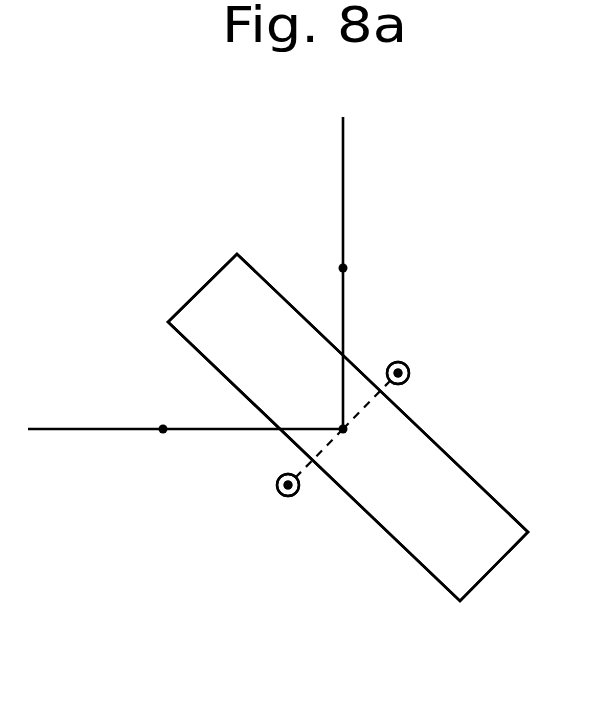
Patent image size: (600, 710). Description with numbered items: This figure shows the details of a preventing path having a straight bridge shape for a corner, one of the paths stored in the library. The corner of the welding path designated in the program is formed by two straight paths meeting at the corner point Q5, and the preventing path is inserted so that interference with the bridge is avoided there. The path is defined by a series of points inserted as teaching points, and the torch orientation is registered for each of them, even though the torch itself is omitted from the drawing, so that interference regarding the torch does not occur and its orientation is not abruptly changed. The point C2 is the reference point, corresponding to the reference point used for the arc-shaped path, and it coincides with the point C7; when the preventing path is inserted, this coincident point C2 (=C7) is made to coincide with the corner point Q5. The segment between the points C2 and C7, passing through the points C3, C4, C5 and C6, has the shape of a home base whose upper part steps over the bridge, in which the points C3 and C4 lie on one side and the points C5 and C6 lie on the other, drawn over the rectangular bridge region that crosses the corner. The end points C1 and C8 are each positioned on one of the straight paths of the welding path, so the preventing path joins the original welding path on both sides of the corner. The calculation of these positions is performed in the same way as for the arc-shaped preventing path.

The teaching point C1 is at (185, 450).
The teaching point C8 is at (371, 273).
The corner point of the welding path Q5 is at (343, 429).
The reference point C2 is at (348, 427).
The teaching point C7 is at (348, 427).
The teaching point C5 is at (448, 381).
The teaching point C6 is at (448, 381).
The teaching point C3 is at (287, 506).
The teaching point C4 is at (287, 506).